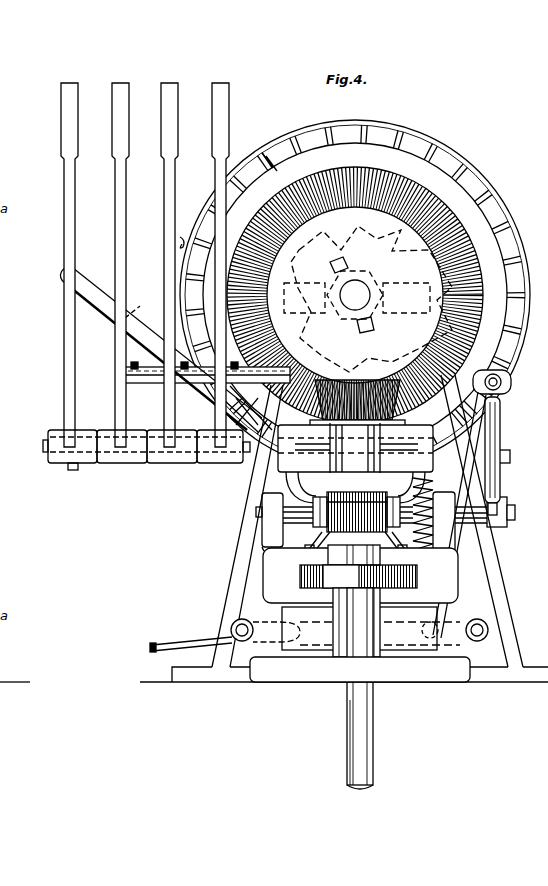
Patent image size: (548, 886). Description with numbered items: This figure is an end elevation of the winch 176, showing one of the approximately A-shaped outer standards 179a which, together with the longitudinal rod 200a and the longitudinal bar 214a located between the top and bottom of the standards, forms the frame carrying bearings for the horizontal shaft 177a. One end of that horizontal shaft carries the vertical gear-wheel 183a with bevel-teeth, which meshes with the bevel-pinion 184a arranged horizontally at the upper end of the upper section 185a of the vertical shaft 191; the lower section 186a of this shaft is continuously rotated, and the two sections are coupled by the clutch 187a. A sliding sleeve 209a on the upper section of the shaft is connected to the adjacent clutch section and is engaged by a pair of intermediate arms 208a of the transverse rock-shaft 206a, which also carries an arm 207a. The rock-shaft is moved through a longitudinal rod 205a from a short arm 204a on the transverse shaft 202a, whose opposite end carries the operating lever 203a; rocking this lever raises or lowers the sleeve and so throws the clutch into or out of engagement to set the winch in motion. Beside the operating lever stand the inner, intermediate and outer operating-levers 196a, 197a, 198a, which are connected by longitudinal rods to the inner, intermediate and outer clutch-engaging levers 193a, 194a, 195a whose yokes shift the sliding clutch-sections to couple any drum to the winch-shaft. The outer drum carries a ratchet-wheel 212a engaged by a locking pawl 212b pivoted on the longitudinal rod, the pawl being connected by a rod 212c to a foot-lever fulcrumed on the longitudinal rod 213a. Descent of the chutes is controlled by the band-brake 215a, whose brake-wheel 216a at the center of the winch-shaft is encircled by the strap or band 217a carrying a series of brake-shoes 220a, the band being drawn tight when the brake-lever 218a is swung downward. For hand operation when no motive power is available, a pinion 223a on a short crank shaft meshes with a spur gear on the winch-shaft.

The winch 176 is at (355, 285).
The horizontal shaft 177a is at (357, 288).
The outer standard 179a is at (236, 542).
The vertical gear-wheel 183a is at (356, 176).
The bevel-pinion 184a is at (333, 390).
The upper section of vertical shaft 185a is at (434, 500).
The lower section of vertical shaft 186a is at (374, 697).
The clutch 187a is at (323, 574).
The vertical shaft 191 is at (358, 753).
The inner clutch-engaging lever 193a is at (146, 384).
The intermediate clutch-engaging lever 194a is at (188, 386).
The outer clutch-engaging lever 195a is at (302, 414).
The inner operating-lever 196a is at (223, 93).
The intermediate operating-lever 197a is at (173, 87).
The outer operating-lever 198a is at (118, 93).
The longitudinal rod 200a is at (508, 377).
The transverse shaft 202a is at (44, 452).
The operating lever 203a is at (66, 110).
The short arm 204a is at (503, 418).
The longitudinal rod 205a is at (502, 436).
The transverse rock-shaft 206a is at (516, 517).
The arm 207a is at (500, 485).
The intermediate arms 208a is at (297, 535).
The sliding sleeve 209a is at (258, 479).
The ratchet-wheel 212a is at (357, 227).
The locking pawl 212b is at (472, 621).
The rod 212c is at (503, 404).
The longitudinal rod 213a is at (482, 655).
The longitudinal bar 214a is at (455, 392).
The band-brake 215a is at (451, 150).
The brake-wheel 216a is at (306, 128).
The strap or band 217a is at (507, 187).
The brake-lever 218a is at (75, 295).
The brake-shoes 220a is at (272, 131).
The pinion 223a is at (180, 240).